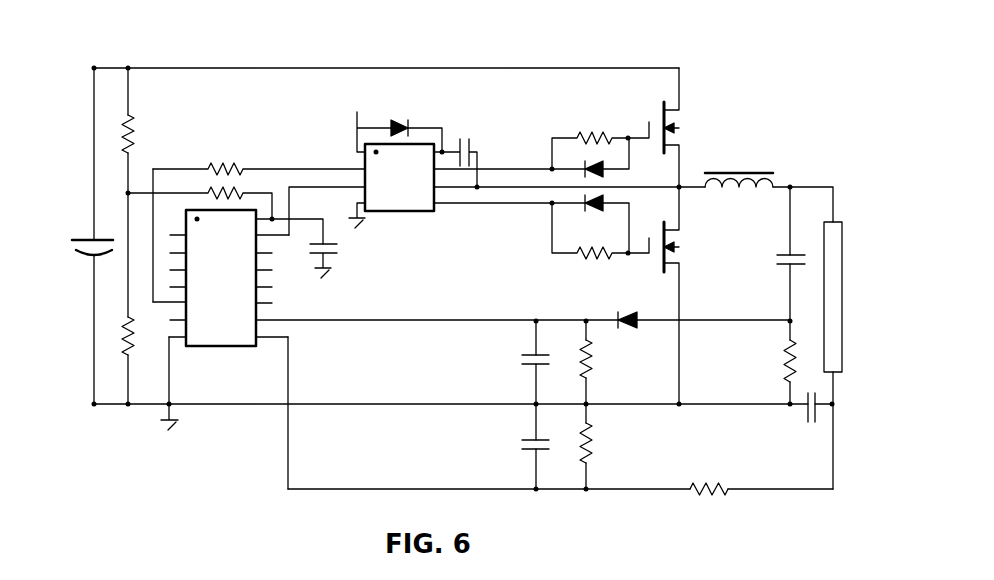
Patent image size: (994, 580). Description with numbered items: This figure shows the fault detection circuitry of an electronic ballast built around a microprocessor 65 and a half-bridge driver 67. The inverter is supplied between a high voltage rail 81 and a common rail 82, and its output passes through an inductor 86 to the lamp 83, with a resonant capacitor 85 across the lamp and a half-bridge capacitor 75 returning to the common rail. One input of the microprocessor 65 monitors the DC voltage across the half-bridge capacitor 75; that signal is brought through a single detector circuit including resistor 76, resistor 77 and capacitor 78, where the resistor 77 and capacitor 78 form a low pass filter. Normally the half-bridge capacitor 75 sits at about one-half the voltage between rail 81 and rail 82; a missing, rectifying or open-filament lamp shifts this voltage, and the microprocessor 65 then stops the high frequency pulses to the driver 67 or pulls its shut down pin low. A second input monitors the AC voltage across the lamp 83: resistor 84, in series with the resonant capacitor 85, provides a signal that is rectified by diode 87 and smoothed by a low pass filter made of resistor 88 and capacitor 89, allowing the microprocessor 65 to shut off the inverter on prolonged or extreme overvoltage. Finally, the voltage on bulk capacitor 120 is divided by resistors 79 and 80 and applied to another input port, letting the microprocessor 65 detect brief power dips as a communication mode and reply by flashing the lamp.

The high voltage rail 81 is at (391, 68).
The common rail 82 is at (392, 404).
The resistor 79 is at (115, 135).
The resistor 80 is at (118, 340).
The bulk capacitor 120 is at (70, 242).
The microprocessor 65 is at (235, 346).
The driver 67 is at (425, 211).
The inductor 86 is at (765, 173).
The resonant capacitor 85 is at (775, 255).
The lamp 83 is at (842, 315).
The resistor 84 is at (782, 355).
The diode 87 is at (625, 310).
The capacitor 89 is at (520, 357).
The resistor 88 is at (595, 357).
The capacitor 78 is at (520, 440).
The resistor 77 is at (598, 440).
The half-bridge capacitor 75 is at (810, 425).
The resistor 76 is at (705, 500).